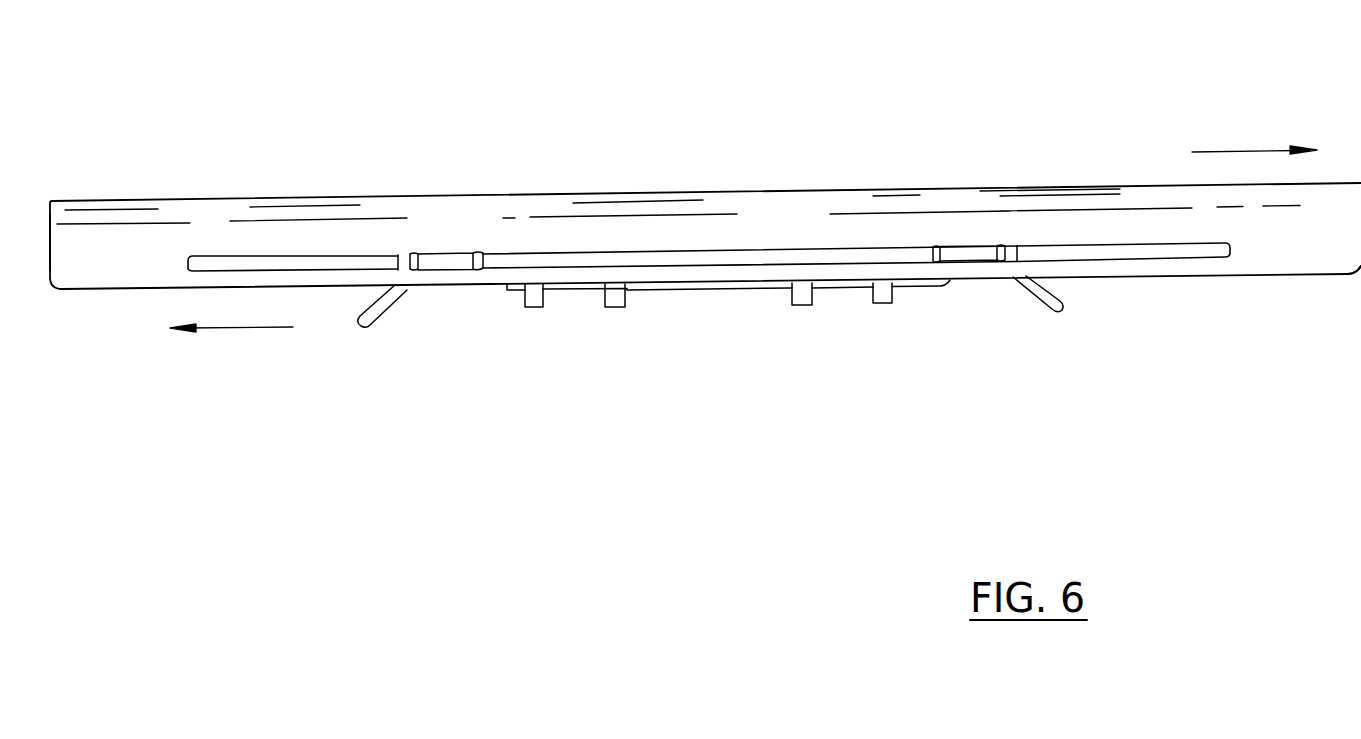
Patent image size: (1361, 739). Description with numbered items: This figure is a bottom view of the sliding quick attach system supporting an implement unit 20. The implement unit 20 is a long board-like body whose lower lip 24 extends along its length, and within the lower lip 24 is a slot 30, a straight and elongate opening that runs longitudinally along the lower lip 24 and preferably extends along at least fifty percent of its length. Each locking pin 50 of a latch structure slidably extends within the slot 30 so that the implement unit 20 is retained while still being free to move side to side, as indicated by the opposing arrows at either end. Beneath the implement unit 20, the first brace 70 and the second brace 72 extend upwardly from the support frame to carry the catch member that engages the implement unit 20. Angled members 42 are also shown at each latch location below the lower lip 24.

The implement unit 20 is at (714, 192).
The lower lip 24 is at (136, 282).
The slot 30 is at (322, 265).
The angled clip 42 is at (370, 313).
The locking pin 50 is at (435, 259).
The first brace 70 is at (797, 296).
The second brace 72 is at (613, 297).